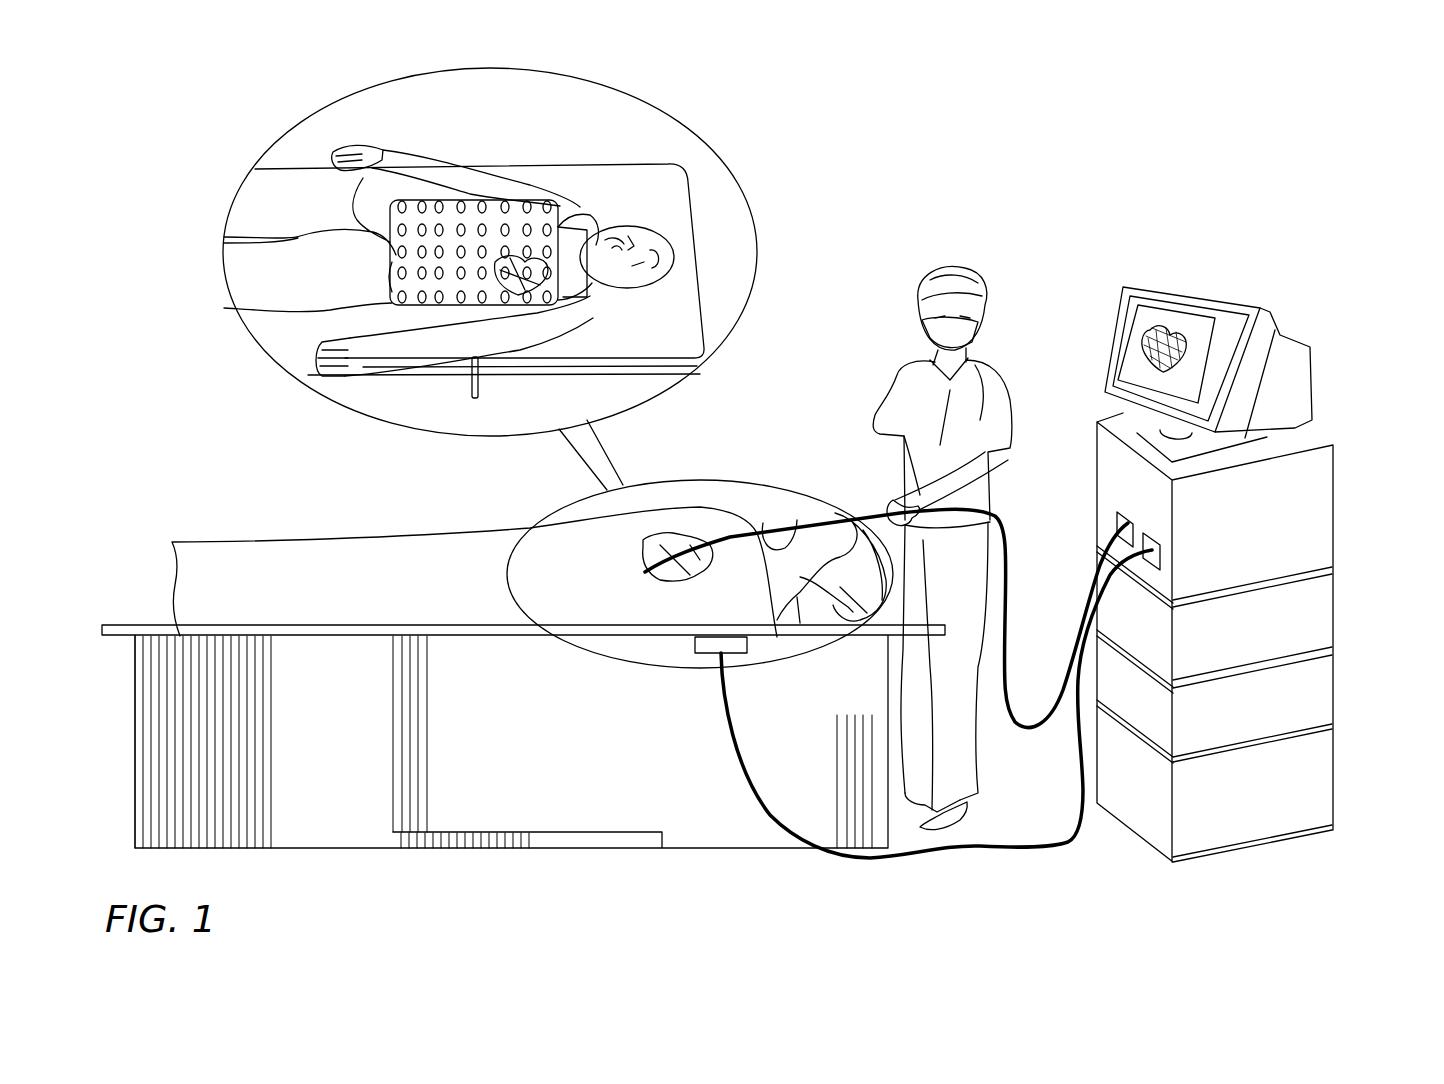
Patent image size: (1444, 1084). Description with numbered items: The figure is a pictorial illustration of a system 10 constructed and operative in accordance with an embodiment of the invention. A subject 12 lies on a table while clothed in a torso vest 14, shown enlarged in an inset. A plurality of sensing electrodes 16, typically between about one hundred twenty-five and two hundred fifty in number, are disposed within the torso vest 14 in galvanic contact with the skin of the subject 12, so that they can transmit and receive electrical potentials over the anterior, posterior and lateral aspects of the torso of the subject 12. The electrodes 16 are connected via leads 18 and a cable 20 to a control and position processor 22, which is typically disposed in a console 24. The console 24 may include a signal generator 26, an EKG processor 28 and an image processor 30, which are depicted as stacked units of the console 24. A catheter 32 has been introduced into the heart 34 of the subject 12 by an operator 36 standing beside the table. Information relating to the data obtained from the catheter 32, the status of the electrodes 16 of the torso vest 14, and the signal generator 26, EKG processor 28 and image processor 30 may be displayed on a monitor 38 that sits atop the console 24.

The system 10 is at (1055, 210).
The subject 12 is at (678, 247).
The torso vest 14 is at (582, 218).
The sensing electrodes 16 is at (395, 205).
The leads 18 is at (395, 276).
The cable 20 is at (474, 384).
The control and position processor 22 is at (1170, 527).
The console 24 is at (1380, 436).
The signal generator 26 is at (1334, 600).
The EKG processor 28 is at (1334, 677).
The image processor 30 is at (1334, 754).
The catheter 32 is at (796, 513).
The heart 34 is at (555, 298).
The operator 36 is at (950, 268).
The monitor 38 is at (1195, 284).